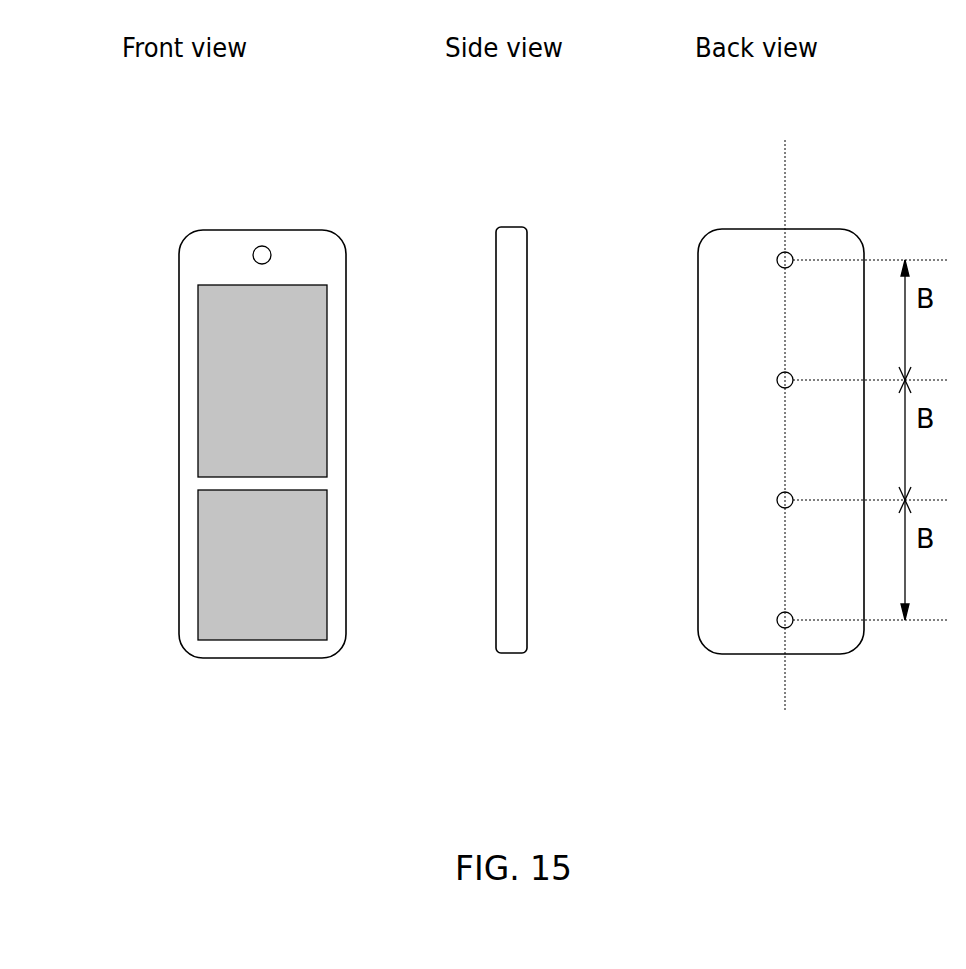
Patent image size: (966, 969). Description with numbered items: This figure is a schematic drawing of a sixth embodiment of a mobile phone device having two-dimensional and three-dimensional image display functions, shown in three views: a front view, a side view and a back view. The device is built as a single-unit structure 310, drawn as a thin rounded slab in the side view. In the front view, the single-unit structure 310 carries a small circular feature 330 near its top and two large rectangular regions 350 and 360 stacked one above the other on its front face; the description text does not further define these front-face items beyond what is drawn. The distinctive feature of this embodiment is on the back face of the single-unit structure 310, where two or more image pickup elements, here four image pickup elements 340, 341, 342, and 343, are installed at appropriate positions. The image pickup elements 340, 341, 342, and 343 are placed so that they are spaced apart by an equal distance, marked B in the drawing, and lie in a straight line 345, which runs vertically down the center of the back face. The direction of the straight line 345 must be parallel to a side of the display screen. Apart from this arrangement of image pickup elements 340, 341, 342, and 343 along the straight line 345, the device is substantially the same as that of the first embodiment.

The single-unit structure 310 is at (493, 393).
The front hole 330 is at (242, 206).
The image pickup element 340 is at (759, 205).
The image pickup element 341 is at (777, 380).
The image pickup element 342 is at (777, 499).
The image pickup element 343 is at (777, 619).
The straight line 345 is at (822, 415).
The upper panel 350 is at (210, 381).
The lower panel 360 is at (207, 565).